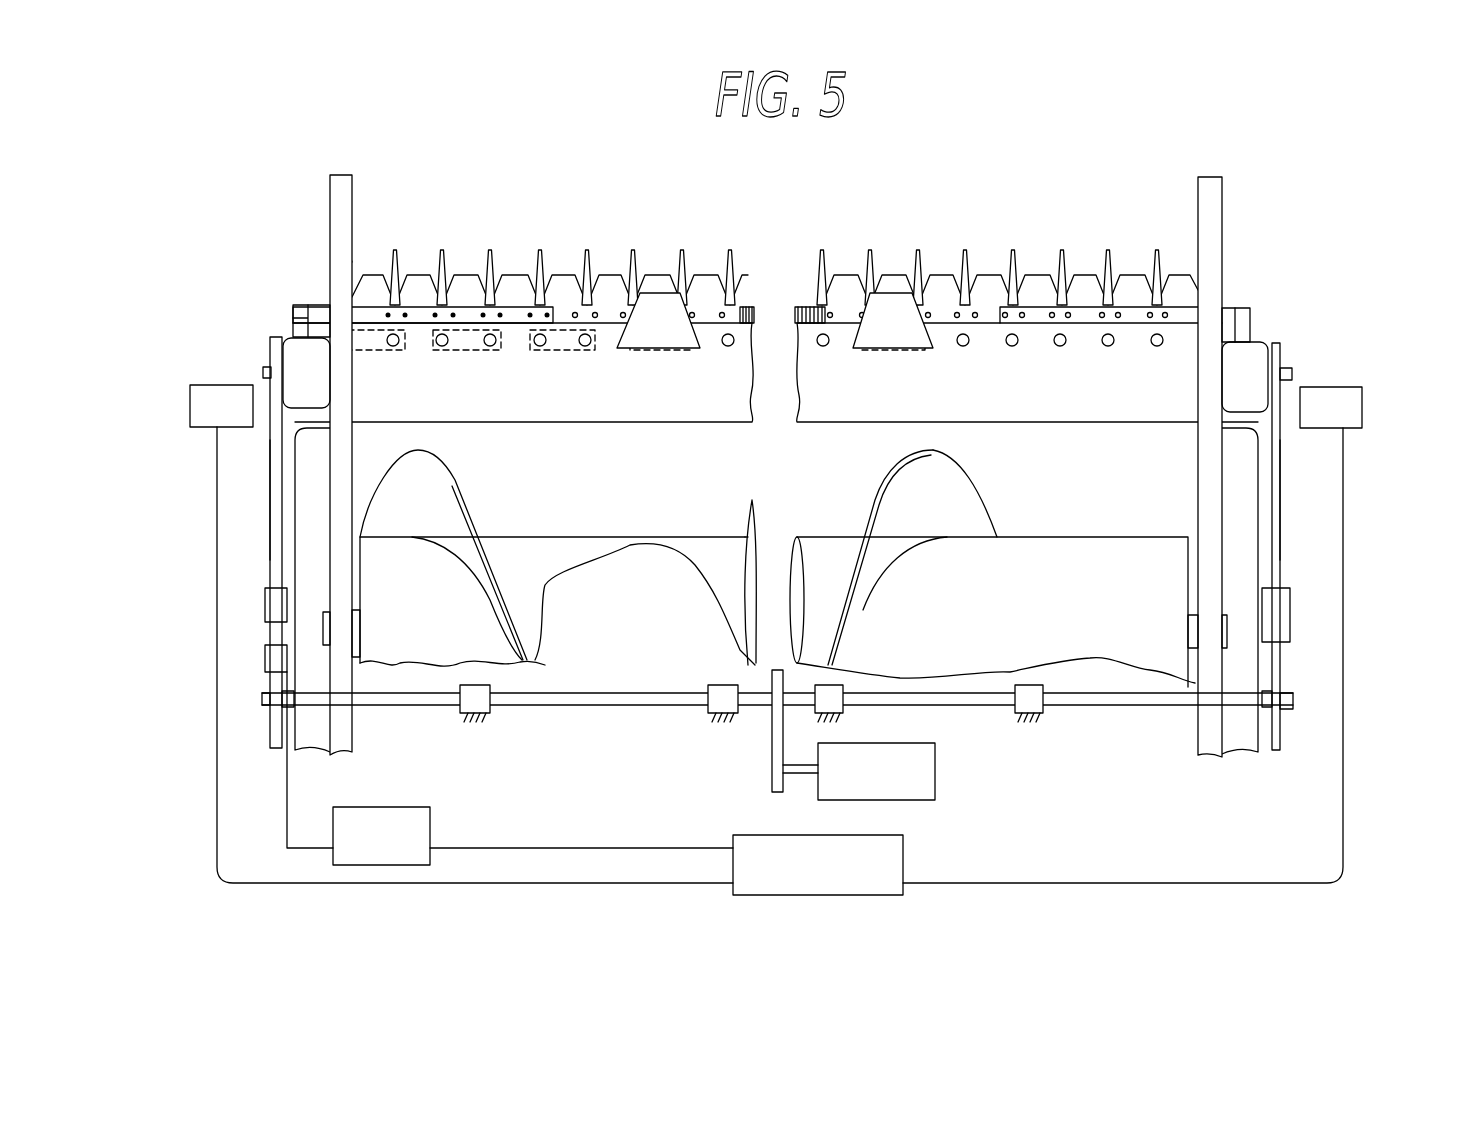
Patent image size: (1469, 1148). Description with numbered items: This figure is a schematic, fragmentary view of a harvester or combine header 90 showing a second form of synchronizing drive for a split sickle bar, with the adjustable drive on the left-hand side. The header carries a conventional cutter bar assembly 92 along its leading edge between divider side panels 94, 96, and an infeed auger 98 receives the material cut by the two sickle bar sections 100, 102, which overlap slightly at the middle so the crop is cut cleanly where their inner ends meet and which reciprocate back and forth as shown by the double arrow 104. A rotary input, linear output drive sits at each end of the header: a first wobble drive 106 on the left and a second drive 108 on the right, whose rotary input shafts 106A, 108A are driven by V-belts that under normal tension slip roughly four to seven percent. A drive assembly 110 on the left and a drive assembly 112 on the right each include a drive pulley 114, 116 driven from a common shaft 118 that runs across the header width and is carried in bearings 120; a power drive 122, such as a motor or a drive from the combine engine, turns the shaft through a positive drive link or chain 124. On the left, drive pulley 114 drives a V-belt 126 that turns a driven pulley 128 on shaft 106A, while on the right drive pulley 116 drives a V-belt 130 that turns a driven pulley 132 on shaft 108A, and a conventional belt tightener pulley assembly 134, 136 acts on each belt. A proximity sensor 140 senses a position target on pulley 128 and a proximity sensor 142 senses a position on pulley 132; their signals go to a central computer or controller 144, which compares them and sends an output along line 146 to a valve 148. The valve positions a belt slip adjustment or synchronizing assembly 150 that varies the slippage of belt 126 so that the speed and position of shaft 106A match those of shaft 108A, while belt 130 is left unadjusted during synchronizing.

The harvester or combine header 90 is at (777, 420).
The cutter bar assembly 92 is at (634, 262).
The divider side panel 94 is at (354, 232).
The divider side panel 96 is at (1200, 222).
The infeed auger 98 is at (572, 550).
The sickle bar section 100 is at (564, 283).
The sickle bar section 102 is at (940, 272).
The double arrow 104 is at (908, 220).
The first wobble drive 106 is at (292, 352).
The rotary shaft 106A is at (263, 372).
The second drive 108 is at (1250, 350).
The rotary shaft 108A is at (1295, 372).
The drive assembly 110 is at (236, 552).
The drive assembly 112 is at (1314, 560).
The drive pulley 114 is at (270, 733).
The drive pulley 116 is at (1283, 737).
The common shaft 118 is at (543, 703).
The bearings 120 is at (458, 713).
The power drive 122 is at (935, 775).
The chain 124 is at (770, 745).
The V-belt 126 is at (270, 488).
The driven pulley 128 is at (270, 337).
The V-belt 130 is at (1283, 492).
The driven pulley 132 is at (1278, 343).
The belt tightener pulley assembly 134 is at (265, 610).
The belt tightener pulley assembly 136 is at (1293, 620).
The proximity sensor 140 is at (190, 418).
The proximity sensor 142 is at (1365, 410).
The central computer or controller 144 is at (845, 897).
The line 146 is at (575, 848).
The valve 148 is at (400, 807).
The belt slip adjustment or synchronizing assembly 150 is at (265, 668).